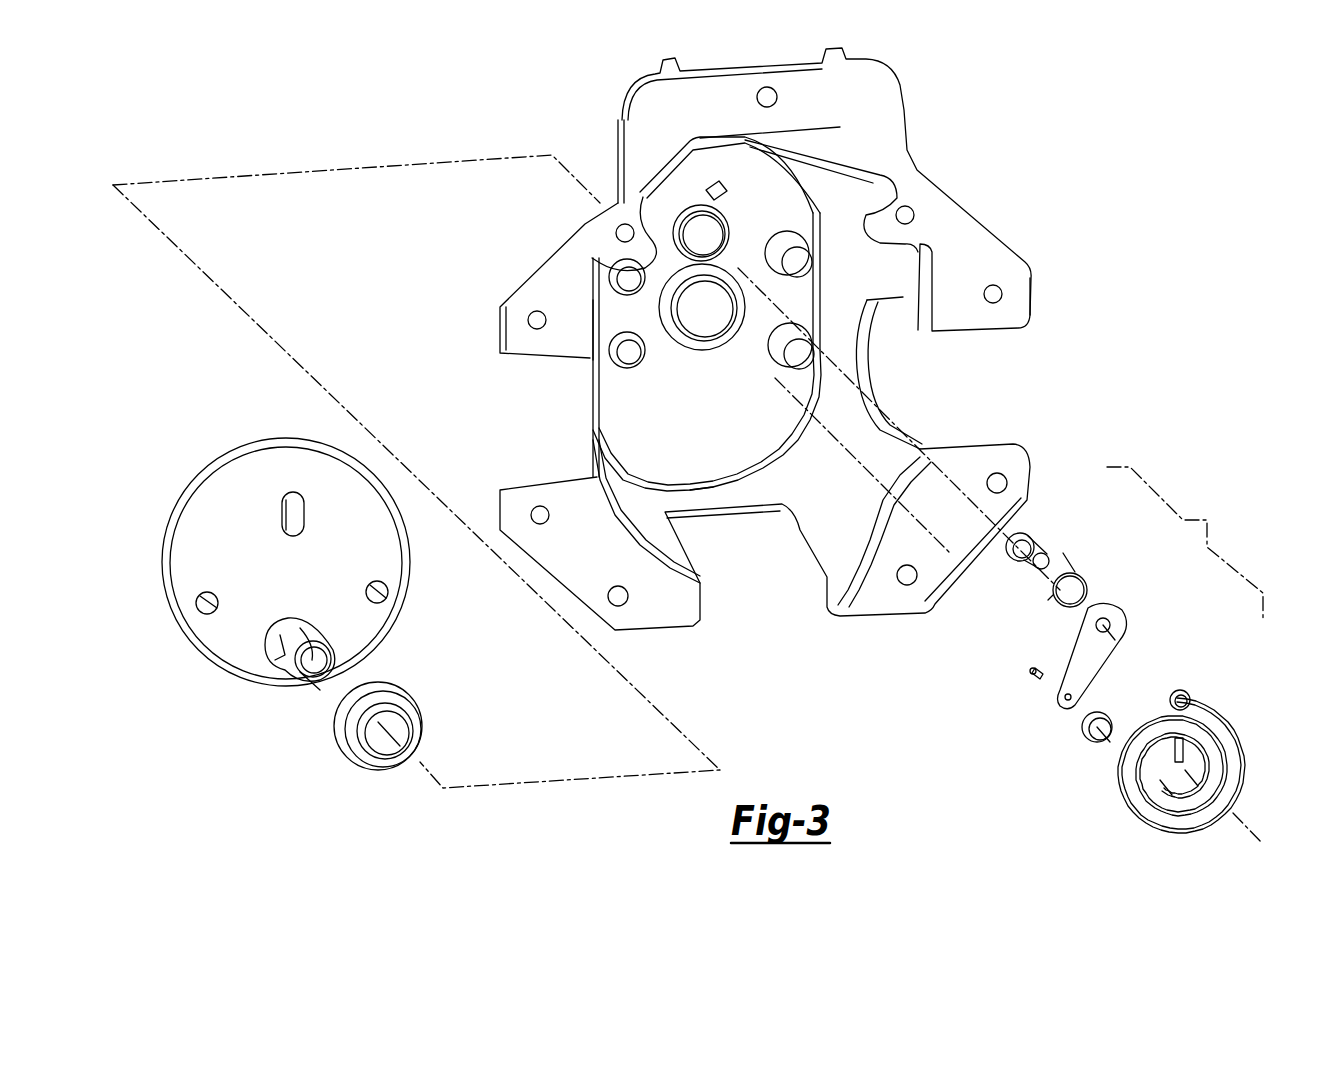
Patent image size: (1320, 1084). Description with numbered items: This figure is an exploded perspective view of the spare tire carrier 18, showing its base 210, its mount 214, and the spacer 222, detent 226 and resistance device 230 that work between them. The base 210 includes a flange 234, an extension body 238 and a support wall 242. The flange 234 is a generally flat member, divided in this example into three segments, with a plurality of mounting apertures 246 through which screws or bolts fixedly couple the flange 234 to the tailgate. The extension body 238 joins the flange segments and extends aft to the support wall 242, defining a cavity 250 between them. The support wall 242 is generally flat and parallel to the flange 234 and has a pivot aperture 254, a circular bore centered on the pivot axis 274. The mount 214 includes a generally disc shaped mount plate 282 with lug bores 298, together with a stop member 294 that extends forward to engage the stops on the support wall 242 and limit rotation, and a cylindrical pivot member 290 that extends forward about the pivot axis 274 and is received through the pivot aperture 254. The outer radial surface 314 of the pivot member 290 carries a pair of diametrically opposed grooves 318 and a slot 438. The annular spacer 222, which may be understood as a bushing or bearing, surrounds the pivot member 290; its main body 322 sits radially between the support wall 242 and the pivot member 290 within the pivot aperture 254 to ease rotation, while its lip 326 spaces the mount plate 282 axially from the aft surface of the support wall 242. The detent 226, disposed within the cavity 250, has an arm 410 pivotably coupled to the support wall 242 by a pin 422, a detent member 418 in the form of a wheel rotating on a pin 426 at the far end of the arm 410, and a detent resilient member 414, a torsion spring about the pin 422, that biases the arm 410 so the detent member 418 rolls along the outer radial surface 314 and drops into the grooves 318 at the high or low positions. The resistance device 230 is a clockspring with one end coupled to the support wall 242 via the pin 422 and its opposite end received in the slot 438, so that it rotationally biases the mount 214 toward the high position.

The carrier 18 is at (1032, 108).
The base 210 is at (800, 353).
The mount 214 is at (304, 560).
The spacer 222 is at (366, 761).
The detent 226 is at (1185, 655).
The resistance device 230 is at (1212, 708).
The flange 234 is at (1022, 285).
The extension body 238 is at (588, 362).
The support wall 242 is at (707, 457).
The mounting apertures 246 is at (767, 87).
The cavity 250 is at (903, 300).
The pivot aperture 254 is at (703, 315).
The pivot axis 274 is at (353, 170).
The mount plate 282 is at (258, 442).
The pivot member 290 is at (320, 683).
The stop member 294 is at (298, 514).
The lug bores 298 is at (213, 607).
The outer radial surface 314 is at (284, 623).
The grooves 318 is at (332, 657).
The main body 322 is at (397, 762).
The lip 326 is at (365, 770).
The arm 410 is at (1113, 640).
The detent resilient member 414 is at (1079, 575).
The detent member 418 is at (1093, 741).
The pin 422 is at (1031, 537).
The pin 426 is at (1032, 675).
The slot 438 is at (310, 630).